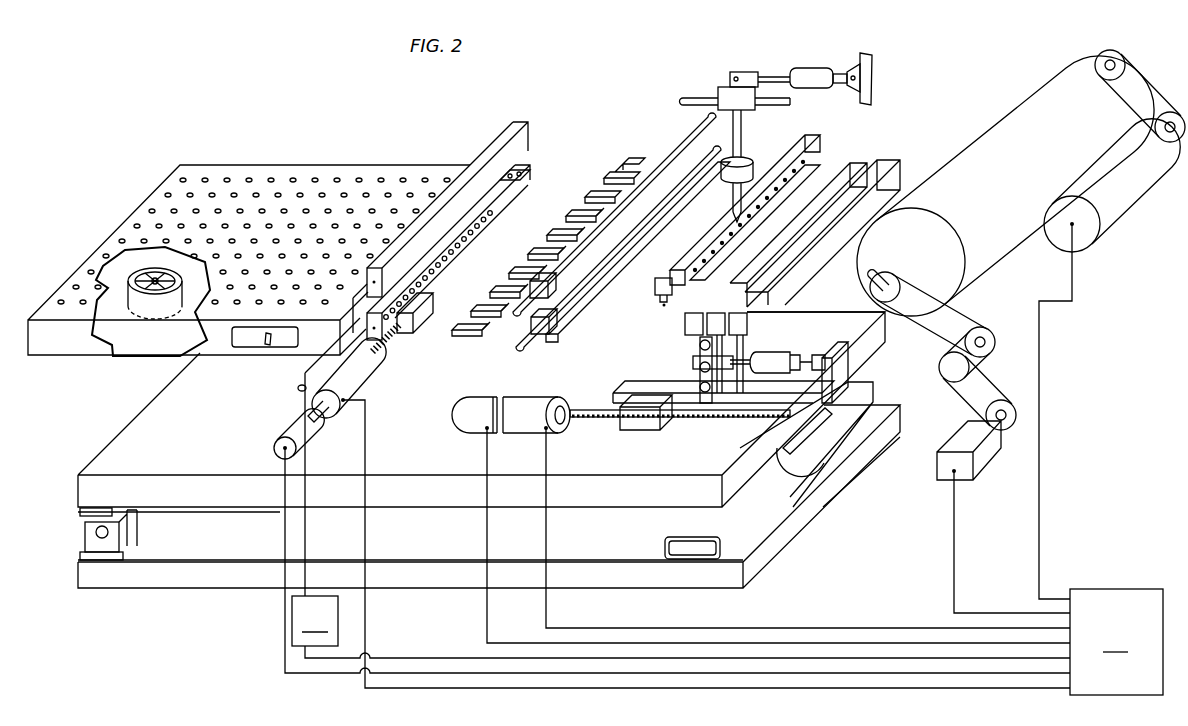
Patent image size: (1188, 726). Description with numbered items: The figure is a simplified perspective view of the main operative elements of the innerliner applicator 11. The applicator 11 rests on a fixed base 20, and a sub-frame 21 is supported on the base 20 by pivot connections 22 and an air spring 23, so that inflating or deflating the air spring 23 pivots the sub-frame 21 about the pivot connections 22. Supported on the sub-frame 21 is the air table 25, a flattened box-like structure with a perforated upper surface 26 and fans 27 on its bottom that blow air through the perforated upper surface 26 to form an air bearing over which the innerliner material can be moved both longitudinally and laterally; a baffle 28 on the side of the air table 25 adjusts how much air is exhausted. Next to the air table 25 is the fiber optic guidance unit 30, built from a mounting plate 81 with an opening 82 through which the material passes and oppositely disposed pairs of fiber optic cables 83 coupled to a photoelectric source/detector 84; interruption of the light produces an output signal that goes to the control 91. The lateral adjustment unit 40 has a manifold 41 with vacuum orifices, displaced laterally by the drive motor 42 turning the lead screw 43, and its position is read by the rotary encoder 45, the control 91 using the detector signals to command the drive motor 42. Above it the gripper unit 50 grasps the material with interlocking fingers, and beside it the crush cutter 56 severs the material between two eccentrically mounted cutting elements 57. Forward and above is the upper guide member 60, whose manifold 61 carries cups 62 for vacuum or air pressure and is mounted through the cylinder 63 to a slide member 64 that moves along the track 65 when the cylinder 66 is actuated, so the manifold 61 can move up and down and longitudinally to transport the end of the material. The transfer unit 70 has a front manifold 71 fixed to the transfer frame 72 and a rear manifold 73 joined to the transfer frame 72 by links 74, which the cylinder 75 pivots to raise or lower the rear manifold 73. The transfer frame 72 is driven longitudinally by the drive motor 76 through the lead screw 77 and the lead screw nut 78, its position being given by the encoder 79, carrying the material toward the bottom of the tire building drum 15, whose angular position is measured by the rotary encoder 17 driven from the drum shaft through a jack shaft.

The applicator 11 is at (588, 122).
The tire building drum 15 is at (947, 273).
The rotary encoder 17 is at (987, 457).
The base 20 is at (450, 574).
The sub-frame 21 is at (173, 489).
The pivot connections 22 is at (92, 541).
The air spring 23 is at (812, 457).
The air table 25 is at (76, 336).
The perforated upper surface 26 is at (256, 199).
The fans 27 is at (157, 294).
The baffle 28 is at (266, 341).
The fiber optic guidance unit 30 is at (516, 167).
The lateral adjustment unit 40 is at (425, 318).
The manifold 41 is at (566, 180).
The drive motor 42 is at (328, 420).
The lead screw 43 is at (391, 342).
The rotary encoder 45 is at (273, 446).
The gripper unit 50 is at (615, 151).
The crush cutter 56 is at (598, 287).
The cutting elements 57 is at (653, 170).
The upper guide member 60 is at (822, 137).
The manifold 61 is at (817, 156).
The cups 62 is at (661, 303).
The cylinder 63 is at (730, 181).
The slide member 64 is at (750, 99).
The track 65 is at (693, 98).
The cylinder 66 is at (815, 72).
The transfer unit 70 is at (831, 258).
The front manifold 71 is at (776, 299).
The transfer frame 72 is at (833, 378).
The rear manifold 73 is at (708, 328).
The links 74 is at (700, 388).
The cylinder 75 is at (774, 358).
The drive motor 76 is at (527, 420).
The lead screw 77 is at (592, 418).
The lead screw nut 78 is at (642, 431).
The encoder 79 is at (467, 420).
The mounting plate 81 is at (440, 205).
The opening 82 is at (533, 168).
The fiber optic cables 83 is at (298, 389).
The photoelectric source/detector 84 is at (681, 627).
The control 91 is at (1116, 642).